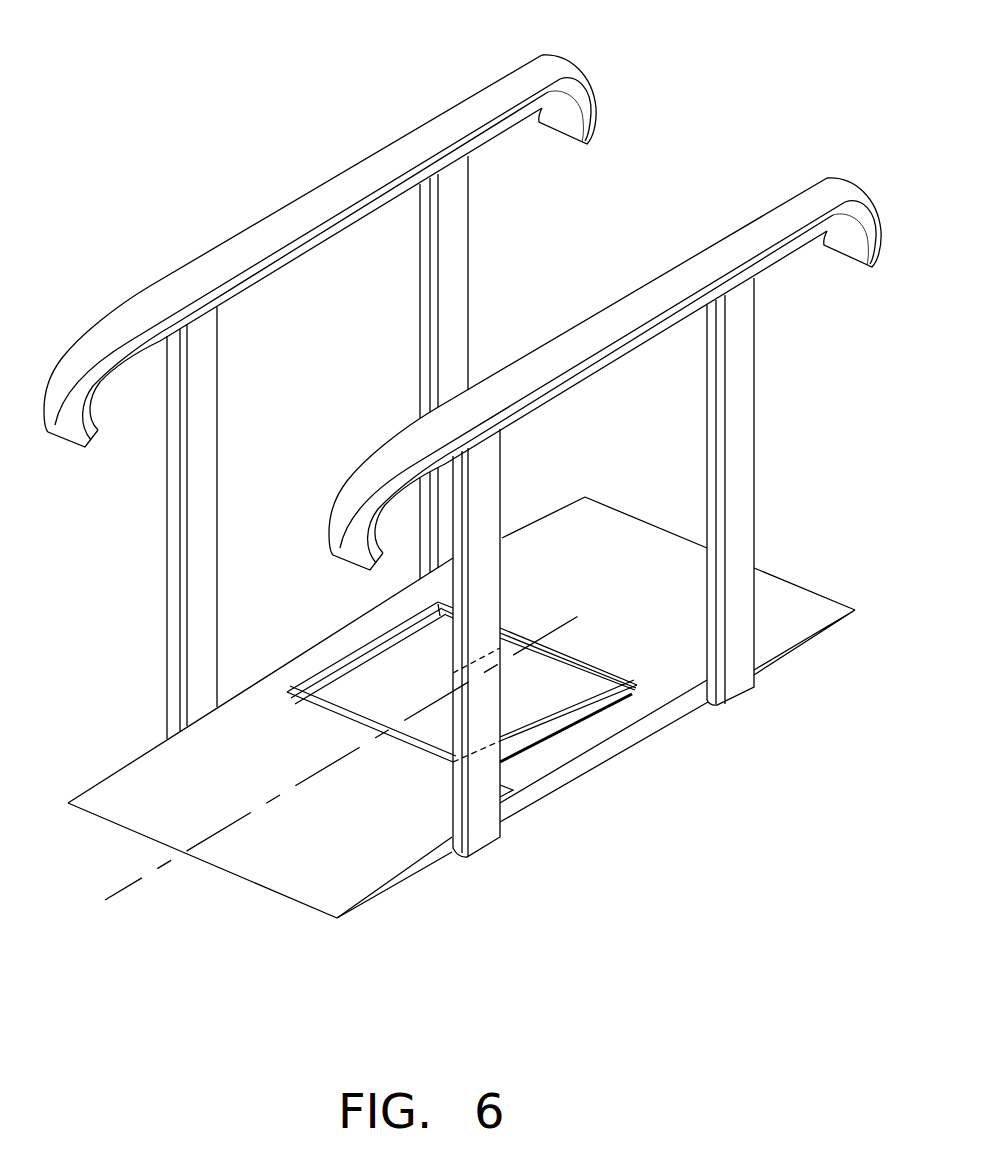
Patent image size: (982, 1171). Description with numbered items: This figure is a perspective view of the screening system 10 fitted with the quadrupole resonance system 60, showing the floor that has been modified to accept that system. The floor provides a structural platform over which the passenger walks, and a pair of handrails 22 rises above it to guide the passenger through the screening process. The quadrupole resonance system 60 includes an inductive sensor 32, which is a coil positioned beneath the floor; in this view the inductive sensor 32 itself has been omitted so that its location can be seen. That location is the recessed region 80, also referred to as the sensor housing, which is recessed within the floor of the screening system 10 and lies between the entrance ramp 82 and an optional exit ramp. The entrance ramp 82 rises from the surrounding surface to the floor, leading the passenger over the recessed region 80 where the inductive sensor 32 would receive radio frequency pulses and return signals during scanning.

The screening system 10 is at (197, 55).
The handrail 22 is at (272, 212).
The inductive sensor 32 is at (549, 703).
The quadrupole resonance system 60 is at (293, 730).
The recessed region 80 is at (328, 698).
The entrance ramp 82 is at (172, 818).